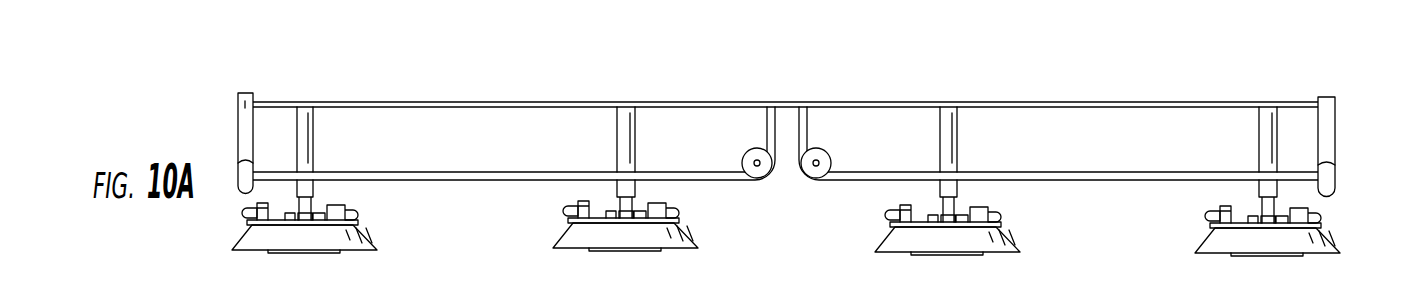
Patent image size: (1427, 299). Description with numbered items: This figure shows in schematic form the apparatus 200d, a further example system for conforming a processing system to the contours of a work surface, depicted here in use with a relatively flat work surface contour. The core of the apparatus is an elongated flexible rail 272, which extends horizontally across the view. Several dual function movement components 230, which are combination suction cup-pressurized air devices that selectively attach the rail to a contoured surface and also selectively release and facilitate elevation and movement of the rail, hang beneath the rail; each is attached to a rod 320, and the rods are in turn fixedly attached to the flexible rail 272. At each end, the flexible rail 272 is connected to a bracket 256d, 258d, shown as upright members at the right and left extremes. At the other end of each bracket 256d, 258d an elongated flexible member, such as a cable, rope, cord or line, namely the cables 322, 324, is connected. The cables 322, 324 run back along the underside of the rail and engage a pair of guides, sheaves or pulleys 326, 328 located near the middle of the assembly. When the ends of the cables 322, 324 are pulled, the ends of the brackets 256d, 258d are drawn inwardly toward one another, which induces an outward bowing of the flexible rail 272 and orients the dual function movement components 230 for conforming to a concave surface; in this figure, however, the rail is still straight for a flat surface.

The apparatus 200d is at (671, 62).
The bracket 258d is at (245, 133).
The bracket 256d is at (1336, 133).
The flexible rail 272 is at (1114, 103).
The rod 320 is at (957, 143).
The cable 324 is at (435, 181).
The cable 322 is at (1130, 181).
The pulley 328 is at (757, 166).
The pulley 326 is at (816, 166).
The dual function movement component 230 is at (1017, 252).